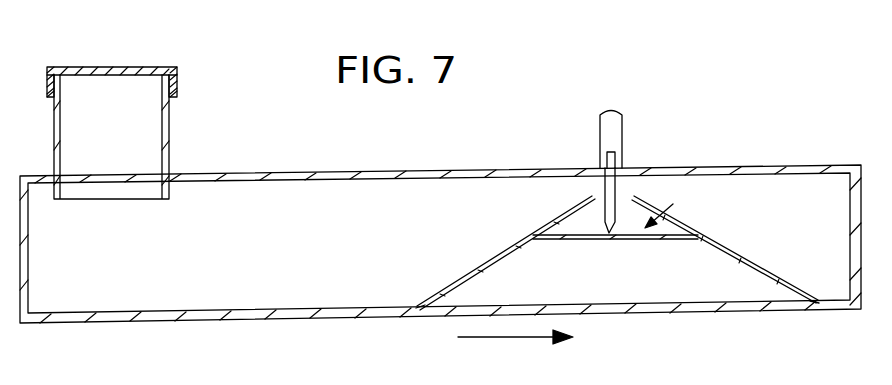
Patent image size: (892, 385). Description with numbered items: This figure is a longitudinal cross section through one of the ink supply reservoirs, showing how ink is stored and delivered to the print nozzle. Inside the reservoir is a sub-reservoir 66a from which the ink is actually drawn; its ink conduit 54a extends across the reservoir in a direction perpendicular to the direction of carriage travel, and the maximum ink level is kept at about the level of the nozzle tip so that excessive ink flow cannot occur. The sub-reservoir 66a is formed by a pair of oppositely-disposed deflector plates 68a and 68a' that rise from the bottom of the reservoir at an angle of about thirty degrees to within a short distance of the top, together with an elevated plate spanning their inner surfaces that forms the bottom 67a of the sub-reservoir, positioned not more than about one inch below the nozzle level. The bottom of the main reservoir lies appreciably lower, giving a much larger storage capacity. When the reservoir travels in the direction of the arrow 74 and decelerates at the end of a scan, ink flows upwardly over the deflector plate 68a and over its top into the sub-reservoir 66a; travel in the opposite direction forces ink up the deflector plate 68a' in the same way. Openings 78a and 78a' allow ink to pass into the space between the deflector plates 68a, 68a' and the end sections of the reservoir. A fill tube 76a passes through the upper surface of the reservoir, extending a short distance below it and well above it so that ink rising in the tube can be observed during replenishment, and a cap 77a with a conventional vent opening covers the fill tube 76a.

The cap 77a is at (137, 67).
The fill tube 76a is at (168, 147).
The ink conduit 54a is at (622, 137).
The sub-reservoir 66a is at (663, 214).
The bottom of the ink sub-reservoir 67a is at (630, 243).
The deflector plate 68a is at (498, 253).
The deflector plate 68a' is at (725, 249).
The opening 78a is at (377, 292).
The opening 78a' is at (825, 285).
The arrow 74 is at (493, 338).